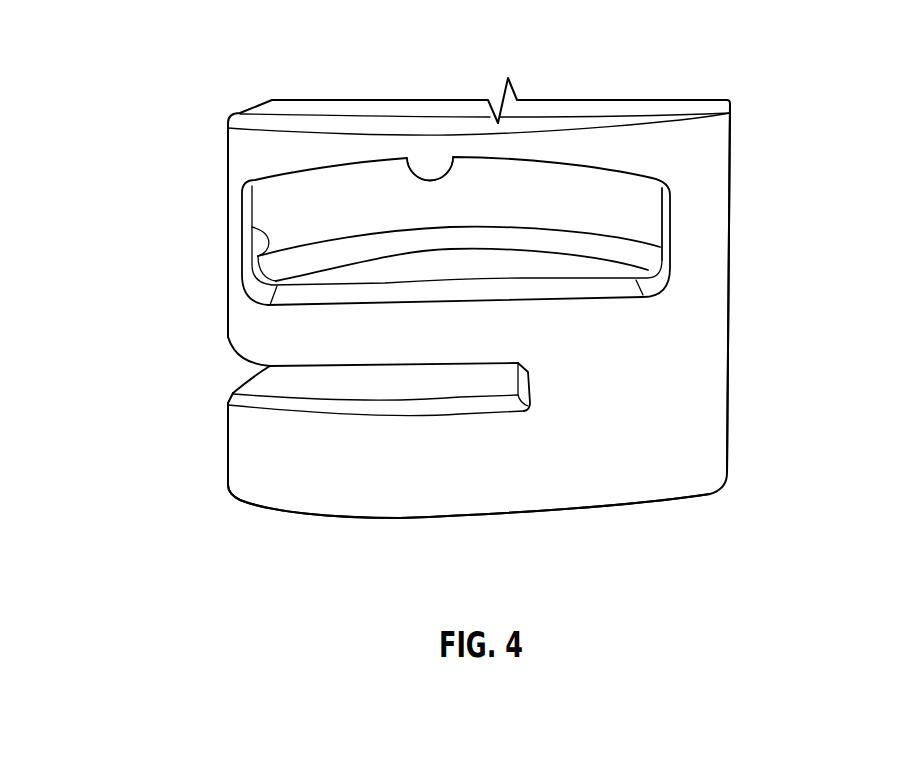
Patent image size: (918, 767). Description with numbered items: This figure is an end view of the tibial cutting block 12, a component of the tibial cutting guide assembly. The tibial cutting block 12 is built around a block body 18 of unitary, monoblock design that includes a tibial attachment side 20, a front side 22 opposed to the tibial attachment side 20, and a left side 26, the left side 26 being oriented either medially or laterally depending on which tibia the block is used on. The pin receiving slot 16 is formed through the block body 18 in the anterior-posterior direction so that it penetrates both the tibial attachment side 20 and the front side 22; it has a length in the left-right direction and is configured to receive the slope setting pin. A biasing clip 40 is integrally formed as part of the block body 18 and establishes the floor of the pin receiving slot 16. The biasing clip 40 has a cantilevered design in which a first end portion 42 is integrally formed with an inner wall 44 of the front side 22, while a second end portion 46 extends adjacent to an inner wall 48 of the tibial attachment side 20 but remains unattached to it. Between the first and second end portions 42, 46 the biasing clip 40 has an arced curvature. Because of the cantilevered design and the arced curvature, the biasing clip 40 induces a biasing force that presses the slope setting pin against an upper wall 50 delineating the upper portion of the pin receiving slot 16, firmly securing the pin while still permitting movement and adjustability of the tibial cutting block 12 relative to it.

The tibial cutting block 12 is at (644, 58).
The pin receiving slot 16 is at (267, 186).
The block body 18 is at (687, 178).
The tibial attachment side 20 is at (227, 297).
The front side 22 is at (730, 248).
The left side 26 is at (593, 458).
The biasing clip 40 is at (471, 222).
The first end portion 42 is at (617, 265).
The inner wall 44 is at (661, 224).
The second end portion 46 is at (280, 263).
The inner wall 48 is at (267, 260).
The upper wall 50 is at (453, 157).